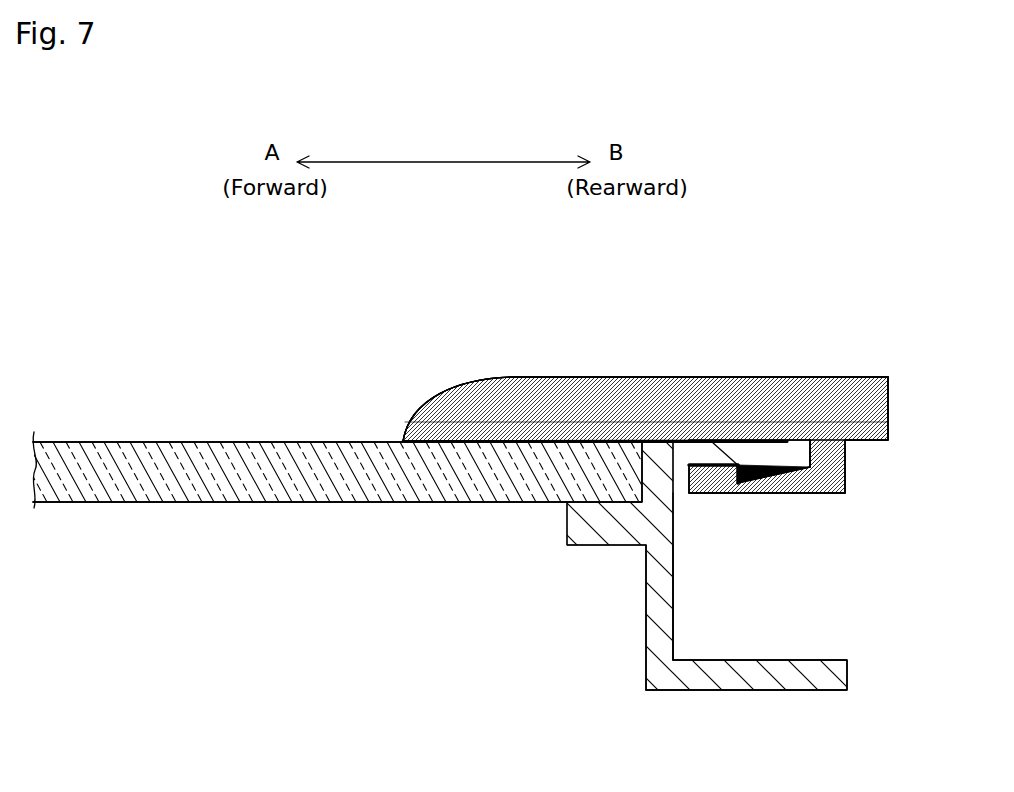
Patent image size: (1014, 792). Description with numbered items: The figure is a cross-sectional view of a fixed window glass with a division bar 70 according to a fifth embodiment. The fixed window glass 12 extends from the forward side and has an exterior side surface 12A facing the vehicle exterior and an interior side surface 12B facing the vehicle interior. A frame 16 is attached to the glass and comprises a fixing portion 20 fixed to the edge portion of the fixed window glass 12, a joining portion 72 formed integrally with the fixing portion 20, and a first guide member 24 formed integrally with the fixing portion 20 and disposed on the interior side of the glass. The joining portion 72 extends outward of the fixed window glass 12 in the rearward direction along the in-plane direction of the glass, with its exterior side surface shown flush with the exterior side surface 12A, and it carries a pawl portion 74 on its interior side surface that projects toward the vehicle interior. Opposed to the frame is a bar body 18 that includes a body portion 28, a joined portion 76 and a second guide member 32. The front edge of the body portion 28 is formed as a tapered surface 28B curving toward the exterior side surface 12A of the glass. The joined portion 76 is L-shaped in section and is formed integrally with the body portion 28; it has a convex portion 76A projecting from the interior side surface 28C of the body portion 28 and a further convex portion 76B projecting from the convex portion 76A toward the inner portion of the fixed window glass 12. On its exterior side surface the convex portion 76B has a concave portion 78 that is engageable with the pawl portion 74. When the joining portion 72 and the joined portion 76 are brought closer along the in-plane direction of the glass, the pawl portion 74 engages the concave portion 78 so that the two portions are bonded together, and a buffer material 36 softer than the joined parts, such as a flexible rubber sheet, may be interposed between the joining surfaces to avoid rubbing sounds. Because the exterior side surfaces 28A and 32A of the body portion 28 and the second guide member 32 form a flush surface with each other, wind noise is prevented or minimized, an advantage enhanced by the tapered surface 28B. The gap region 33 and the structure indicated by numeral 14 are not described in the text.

The fixed window glass 12 is at (170, 426).
The exterior side surface 12A is at (248, 442).
The interior side surface 12B is at (248, 502).
The cover member 14 is at (749, 309).
The frame 16 is at (656, 708).
The bar body 18 is at (803, 359).
The fixing portion 20 is at (660, 535).
The first guide member 24 is at (776, 700).
The body portion 28 is at (663, 355).
The exterior side surface 28A is at (585, 377).
The tapered surface 28B is at (510, 377).
The interior side surface 28C is at (786, 470).
The second guide member 32 is at (883, 371).
The exterior side surface 32A is at (835, 376).
The gap 33 is at (845, 576).
The buffer material 36 is at (707, 463).
The fixed window glass with a division bar 70 is at (699, 244).
The joining portion 72 is at (722, 464).
The pawl portion 74 is at (736, 478).
The joined portion 76 is at (817, 484).
The convex portion 76A is at (837, 463).
The convex portion 76B is at (710, 487).
The concave portion 78 is at (747, 476).